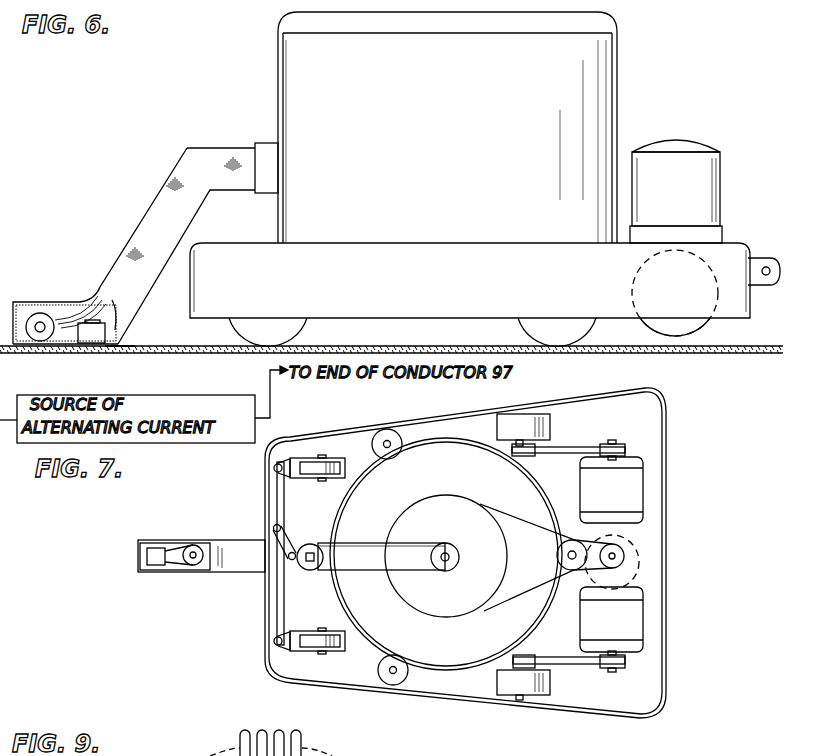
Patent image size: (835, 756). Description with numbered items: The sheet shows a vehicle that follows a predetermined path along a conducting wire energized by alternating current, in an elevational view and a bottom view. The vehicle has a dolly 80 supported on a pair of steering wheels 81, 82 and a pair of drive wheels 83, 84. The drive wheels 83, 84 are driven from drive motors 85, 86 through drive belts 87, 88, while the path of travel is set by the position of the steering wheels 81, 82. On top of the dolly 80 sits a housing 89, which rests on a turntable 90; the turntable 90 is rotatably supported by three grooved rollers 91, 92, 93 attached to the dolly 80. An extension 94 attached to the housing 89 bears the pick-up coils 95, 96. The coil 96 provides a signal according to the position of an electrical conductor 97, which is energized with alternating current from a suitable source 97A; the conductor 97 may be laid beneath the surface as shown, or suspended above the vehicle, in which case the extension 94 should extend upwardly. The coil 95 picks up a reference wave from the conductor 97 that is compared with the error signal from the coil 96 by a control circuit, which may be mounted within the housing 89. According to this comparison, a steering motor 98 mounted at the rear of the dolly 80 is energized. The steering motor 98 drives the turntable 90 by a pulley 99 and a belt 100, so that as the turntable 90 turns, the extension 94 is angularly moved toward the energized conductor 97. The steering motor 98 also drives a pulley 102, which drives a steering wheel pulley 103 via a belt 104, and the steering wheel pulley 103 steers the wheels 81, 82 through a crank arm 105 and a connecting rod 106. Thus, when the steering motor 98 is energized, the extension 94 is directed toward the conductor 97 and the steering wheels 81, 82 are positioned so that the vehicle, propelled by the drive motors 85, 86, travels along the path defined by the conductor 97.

In FIG. 6, the dolly 80 is at (215, 305).
In FIG. 7, the dolly 80 is at (273, 442).
In FIG. 7, the steering wheel 81 is at (311, 460).
In FIG. 7, the steering wheel 82 is at (317, 653).
In FIG. 7, the drive wheel 83 is at (507, 420).
In FIG. 7, the drive wheel 84 is at (534, 685).
In FIG. 7, the drive motor 85 is at (612, 487).
In FIG. 6, the drive motor 86 is at (680, 325).
In FIG. 7, the drive belt 87 is at (582, 446).
In FIG. 7, the drive belt 88 is at (578, 665).
In FIG. 6, the housing 89 is at (585, 92).
In FIG. 7, the turntable 90 is at (458, 661).
In FIG. 7, the grooved roller 91 is at (392, 686).
In FIG. 7, the grooved roller 92 is at (388, 429).
In FIG. 7, the grooved roller 93 is at (638, 548).
In FIG. 6, the extension 94 is at (148, 228).
In FIG. 6, the pick-up coil 95 is at (40, 343).
In FIG. 9, the pick-up coil 95 is at (301, 735).
In FIG. 6, the pick-up coil 96 is at (92, 338).
In FIG. 6, the electrical conductor 97 is at (172, 356).
In FIG. 6, the source 97A is at (118, 374).
In FIG. 6, the steering motor 98 is at (690, 187).
In FIG. 7, the pulley 99 is at (625, 558).
In FIG. 7, the belt 100 is at (540, 590).
In FIG. 7, the pulley 102 is at (455, 556).
In FIG. 7, the steering wheel pulley 103 is at (303, 546).
In FIG. 7, the belt 104 is at (372, 545).
In FIG. 7, the crank arm 105 is at (275, 532).
In FIG. 7, the connecting rod 106 is at (276, 488).